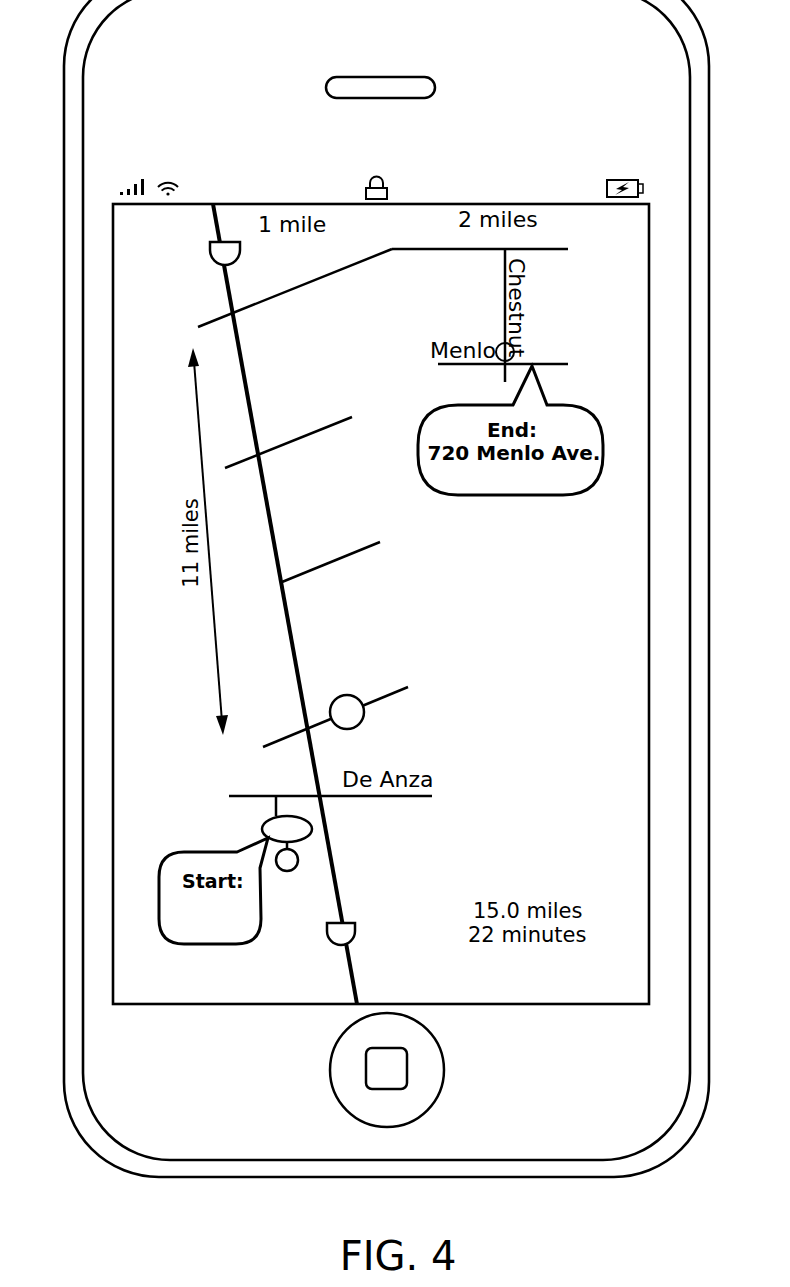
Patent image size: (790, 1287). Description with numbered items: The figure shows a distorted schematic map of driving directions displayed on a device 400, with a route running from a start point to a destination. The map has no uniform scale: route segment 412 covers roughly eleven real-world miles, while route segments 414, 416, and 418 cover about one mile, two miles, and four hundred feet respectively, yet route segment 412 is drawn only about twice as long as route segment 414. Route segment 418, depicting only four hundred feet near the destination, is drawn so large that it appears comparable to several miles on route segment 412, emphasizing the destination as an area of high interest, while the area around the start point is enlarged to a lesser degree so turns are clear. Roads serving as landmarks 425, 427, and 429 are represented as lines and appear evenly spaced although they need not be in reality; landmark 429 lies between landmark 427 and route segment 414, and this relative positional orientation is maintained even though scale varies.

The mobile computing device 400 is at (608, 291).
The route segment 412 is at (295, 647).
The route segment 414 is at (300, 288).
The route segment 416 is at (445, 249).
The route segment 418 is at (507, 362).
The landmark 425 is at (392, 698).
The landmark 427 is at (370, 547).
The landmark 429 is at (333, 427).